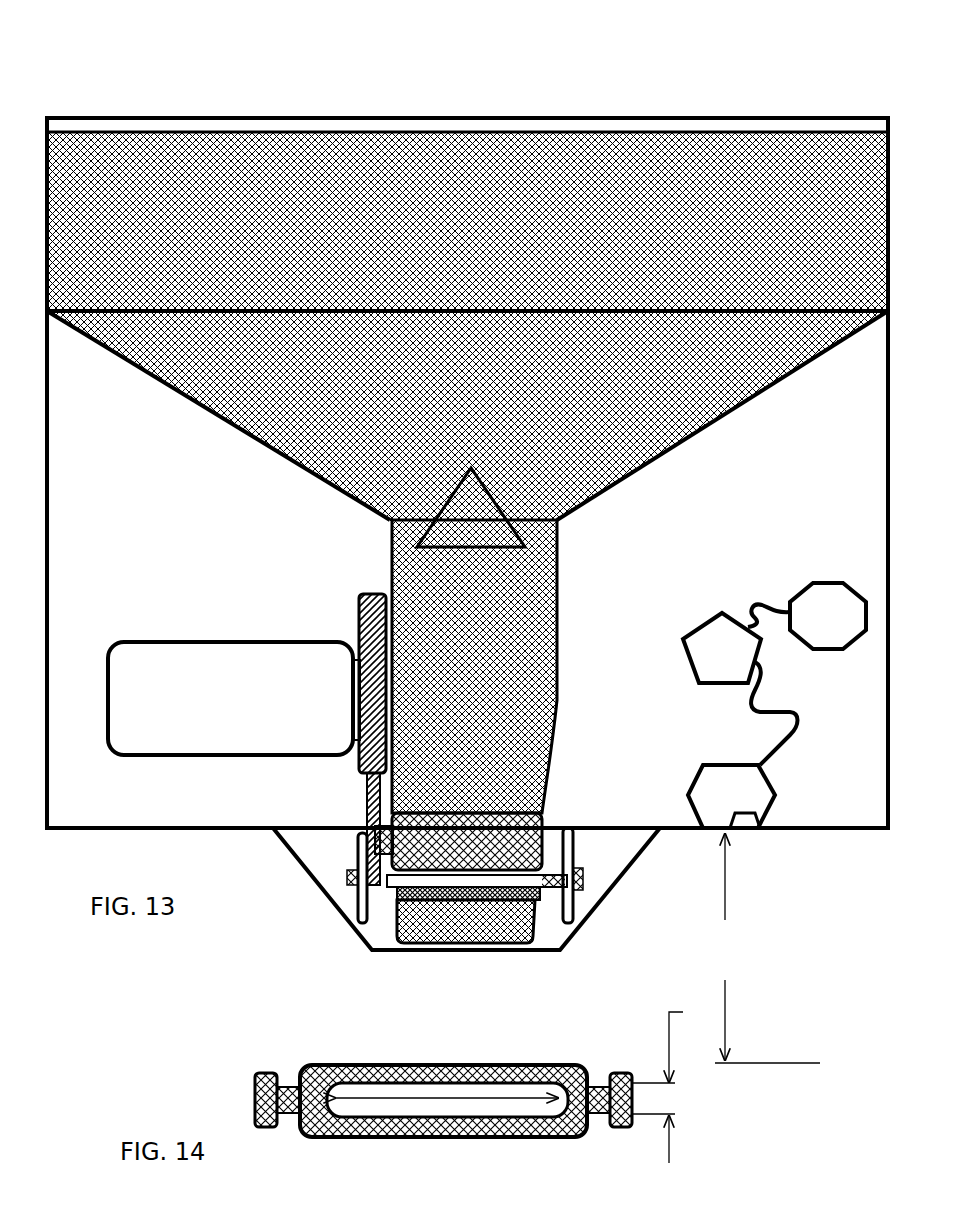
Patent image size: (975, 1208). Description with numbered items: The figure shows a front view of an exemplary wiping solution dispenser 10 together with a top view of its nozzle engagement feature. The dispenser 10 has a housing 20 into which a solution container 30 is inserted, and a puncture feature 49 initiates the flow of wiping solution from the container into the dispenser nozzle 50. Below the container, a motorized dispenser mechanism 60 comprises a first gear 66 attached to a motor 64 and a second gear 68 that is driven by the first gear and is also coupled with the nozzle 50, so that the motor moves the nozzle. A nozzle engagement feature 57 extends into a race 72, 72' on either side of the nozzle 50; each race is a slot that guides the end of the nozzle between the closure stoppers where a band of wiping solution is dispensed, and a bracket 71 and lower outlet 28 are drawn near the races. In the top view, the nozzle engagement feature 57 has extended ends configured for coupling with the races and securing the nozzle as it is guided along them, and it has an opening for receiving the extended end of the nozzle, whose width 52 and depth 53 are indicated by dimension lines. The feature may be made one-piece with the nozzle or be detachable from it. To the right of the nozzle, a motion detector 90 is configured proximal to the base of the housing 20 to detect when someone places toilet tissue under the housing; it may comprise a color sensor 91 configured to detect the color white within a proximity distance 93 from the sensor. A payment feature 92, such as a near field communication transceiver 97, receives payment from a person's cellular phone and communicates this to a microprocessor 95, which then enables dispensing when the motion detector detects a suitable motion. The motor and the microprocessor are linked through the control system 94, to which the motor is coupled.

In FIG. 13, the wiping solution dispenser 10 is at (178, 128).
In FIG. 13, the housing 20 is at (585, 170).
In FIG. 13, the outlet / lower funnel 28 is at (538, 945).
In FIG. 13, the solution container 30 is at (690, 372).
In FIG. 13, the puncture feature 49 is at (557, 545).
In FIG. 13, the dispenser nozzle 50 is at (525, 650).
In FIG. 14, the width 52 is at (440, 1095).
In FIG. 14, the depth 53 is at (674, 1077).
In FIG. 13, the nozzle engagement feature 57 is at (573, 918).
In FIG. 14, the nozzle engagement feature 57 is at (300, 1072).
In FIG. 13, the motorized dispenser mechanism 60 is at (268, 640).
In FIG. 13, the motor 64 is at (170, 657).
In FIG. 13, the first gear 66 is at (357, 612).
In FIG. 13, the second gear 68 is at (368, 798).
In FIG. 13, the bracket 71 is at (356, 840).
In FIG. 13, the race 72 is at (325, 909).
In FIG. 13, the race 72' is at (626, 843).
In FIG. 13, the motion detector 90 is at (731, 796).
In FIG. 13, the color sensor 91 is at (748, 832).
In FIG. 13, the payment feature 92 is at (810, 585).
In FIG. 13, the proximity distance 93 is at (766, 948).
In FIG. 13, the control system 94 is at (766, 594).
In FIG. 13, the microprocessor 95 is at (722, 648).
In FIG. 13, the near field communication transceiver 97 is at (828, 616).